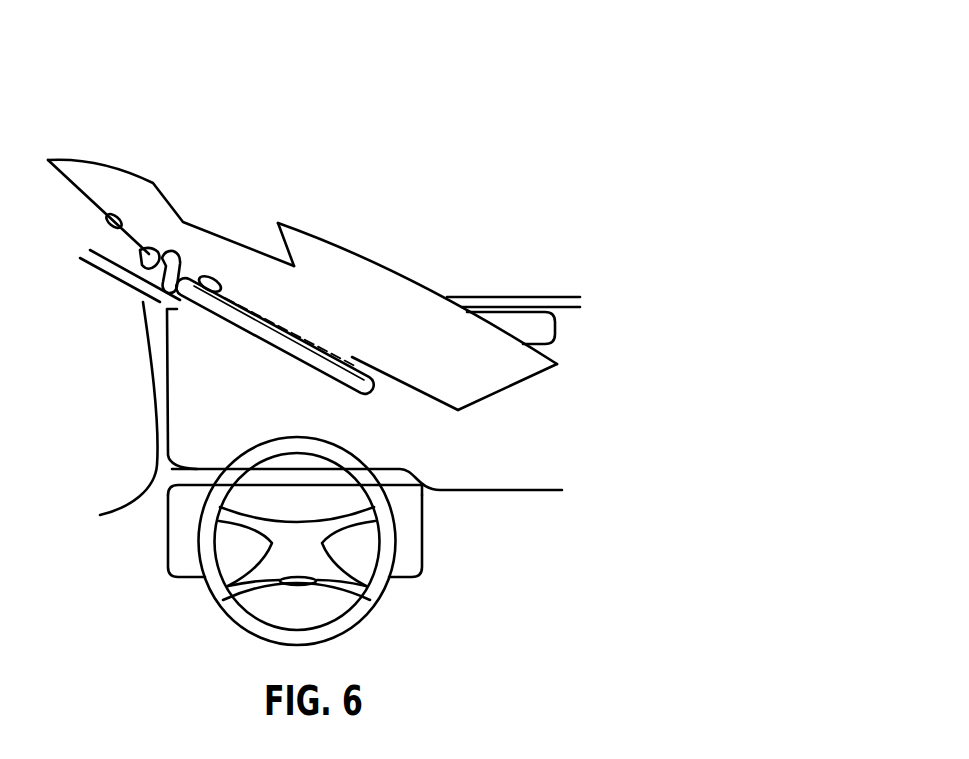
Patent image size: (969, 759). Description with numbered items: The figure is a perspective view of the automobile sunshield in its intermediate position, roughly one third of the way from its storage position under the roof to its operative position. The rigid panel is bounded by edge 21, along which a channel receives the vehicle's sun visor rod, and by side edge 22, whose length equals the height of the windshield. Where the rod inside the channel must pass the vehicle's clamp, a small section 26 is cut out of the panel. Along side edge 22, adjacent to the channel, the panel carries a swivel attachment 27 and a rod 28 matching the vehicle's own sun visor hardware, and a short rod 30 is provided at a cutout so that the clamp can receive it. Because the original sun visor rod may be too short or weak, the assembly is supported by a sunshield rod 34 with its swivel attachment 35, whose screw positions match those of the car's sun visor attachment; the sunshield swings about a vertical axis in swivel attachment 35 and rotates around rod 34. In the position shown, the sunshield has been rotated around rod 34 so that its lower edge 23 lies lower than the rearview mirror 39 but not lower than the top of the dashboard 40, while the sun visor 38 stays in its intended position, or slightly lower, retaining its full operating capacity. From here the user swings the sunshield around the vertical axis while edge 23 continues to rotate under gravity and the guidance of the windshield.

The edge 21 is at (80, 187).
The edge 22 is at (380, 372).
The lower edge 23 is at (527, 382).
The small section 26 is at (121, 226).
The swivel attachment 27 is at (172, 252).
The rod 28 is at (184, 258).
The short rod 30 is at (215, 278).
The sunshield rod 34 is at (150, 256).
The swivel attachment 35 is at (154, 270).
The sun visor 38 is at (252, 330).
The rearview mirror 39 is at (540, 333).
The dashboard 40 is at (425, 477).